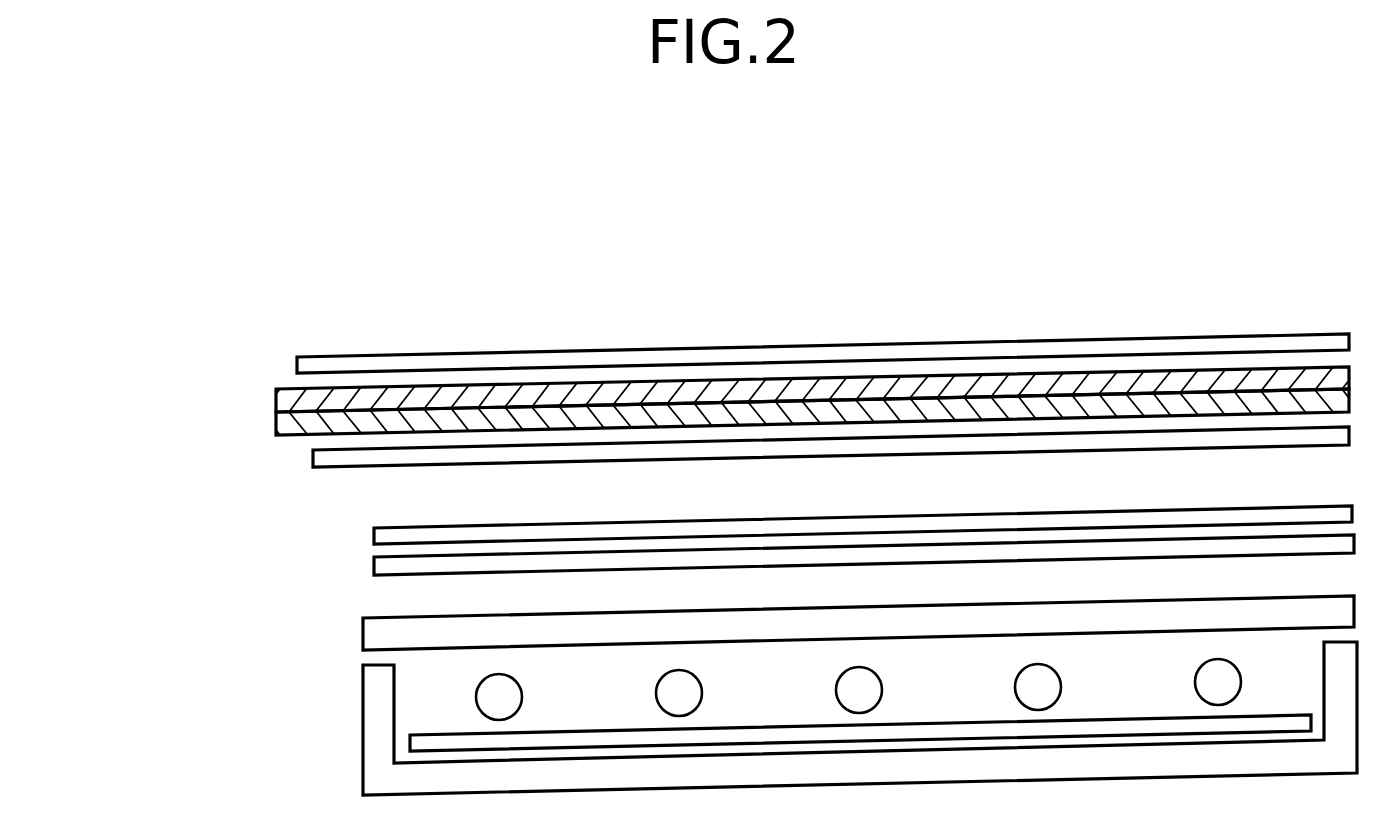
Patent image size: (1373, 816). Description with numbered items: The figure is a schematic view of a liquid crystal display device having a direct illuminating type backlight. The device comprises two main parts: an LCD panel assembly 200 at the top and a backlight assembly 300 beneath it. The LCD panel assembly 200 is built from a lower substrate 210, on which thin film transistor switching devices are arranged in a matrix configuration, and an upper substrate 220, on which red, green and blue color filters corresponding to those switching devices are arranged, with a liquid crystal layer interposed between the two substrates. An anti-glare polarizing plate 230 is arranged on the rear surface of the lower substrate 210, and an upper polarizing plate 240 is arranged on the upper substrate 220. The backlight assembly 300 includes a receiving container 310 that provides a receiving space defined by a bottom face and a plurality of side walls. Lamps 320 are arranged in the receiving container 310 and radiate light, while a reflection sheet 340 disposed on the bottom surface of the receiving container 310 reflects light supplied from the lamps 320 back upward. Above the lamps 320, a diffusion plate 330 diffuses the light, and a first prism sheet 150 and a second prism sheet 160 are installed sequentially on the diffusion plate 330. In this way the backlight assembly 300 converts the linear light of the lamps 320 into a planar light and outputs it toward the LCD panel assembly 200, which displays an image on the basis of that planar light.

The LCD panel assembly 200 is at (143, 305).
The upper polarizing plate 240 is at (307, 366).
The upper substrate 220 is at (286, 403).
The lower substrate 210 is at (286, 422).
The anti-glare polarizing plate 230 is at (316, 453).
The backlight assembly 300 is at (147, 553).
The second prism sheet 160 is at (374, 534).
The first prism sheet 150 is at (374, 564).
The diffusion plate 330 is at (374, 631).
The lamps 320 is at (374, 695).
The receiving container 310 is at (418, 741).
The reflection sheet 340 is at (497, 698).